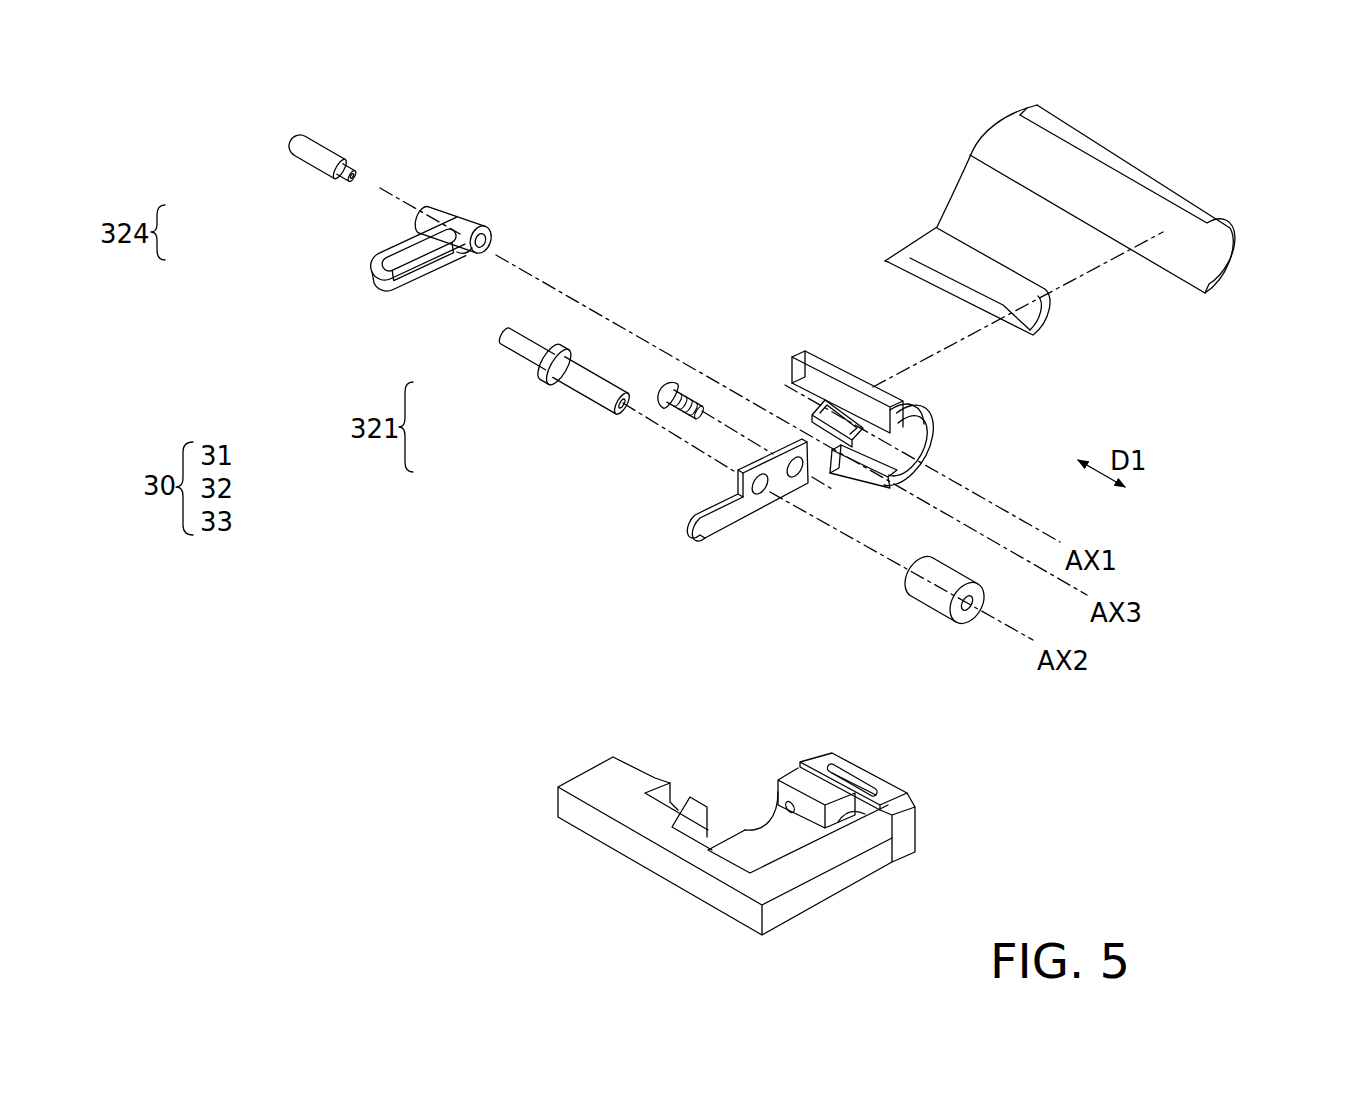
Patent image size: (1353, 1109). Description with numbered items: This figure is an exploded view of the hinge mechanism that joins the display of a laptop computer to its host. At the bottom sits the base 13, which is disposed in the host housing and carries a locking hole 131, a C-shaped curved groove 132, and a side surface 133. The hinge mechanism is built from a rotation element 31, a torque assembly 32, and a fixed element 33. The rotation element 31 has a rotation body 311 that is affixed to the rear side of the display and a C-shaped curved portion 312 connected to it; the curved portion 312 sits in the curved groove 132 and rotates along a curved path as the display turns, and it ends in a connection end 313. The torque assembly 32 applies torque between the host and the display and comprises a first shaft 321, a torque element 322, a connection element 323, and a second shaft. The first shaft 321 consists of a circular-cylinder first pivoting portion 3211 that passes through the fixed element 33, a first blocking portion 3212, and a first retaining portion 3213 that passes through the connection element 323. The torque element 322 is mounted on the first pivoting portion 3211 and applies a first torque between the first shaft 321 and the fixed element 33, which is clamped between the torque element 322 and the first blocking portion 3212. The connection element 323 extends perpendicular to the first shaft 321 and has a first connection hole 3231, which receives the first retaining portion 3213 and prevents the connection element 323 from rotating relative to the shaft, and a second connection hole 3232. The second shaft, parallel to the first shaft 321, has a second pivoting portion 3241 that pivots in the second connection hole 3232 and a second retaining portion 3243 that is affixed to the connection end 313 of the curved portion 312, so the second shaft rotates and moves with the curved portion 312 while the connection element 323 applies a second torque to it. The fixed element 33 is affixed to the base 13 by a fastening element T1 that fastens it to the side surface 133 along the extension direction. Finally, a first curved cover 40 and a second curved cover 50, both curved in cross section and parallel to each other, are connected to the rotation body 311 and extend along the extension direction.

The base 13 is at (908, 832).
The locking hole 131 is at (788, 790).
The curved groove 132 is at (880, 781).
The side surface 133 is at (813, 757).
The rotation element 31 is at (942, 428).
The rotation body 311 is at (832, 351).
The curved portion 312 is at (922, 400).
The connection end 313 is at (862, 478).
The torque assembly 32 is at (270, 108).
The first shaft 321 is at (523, 403).
The first pivoting portion 3211 is at (585, 402).
The first blocking portion 3212 is at (551, 385).
The first retaining portion 3213 is at (532, 368).
The torque element 322 is at (928, 625).
The connection element 323 is at (369, 300).
The first connection hole 3231 is at (410, 282).
The second connection hole 3232 is at (492, 236).
The second pivoting portion 3241 is at (291, 157).
The second retaining portion 3243 is at (337, 173).
The fixed element 33 is at (712, 556).
The first curved cover 40 is at (1238, 258).
The second curved cover 50 is at (1053, 311).
The fastening element T1 is at (680, 420).